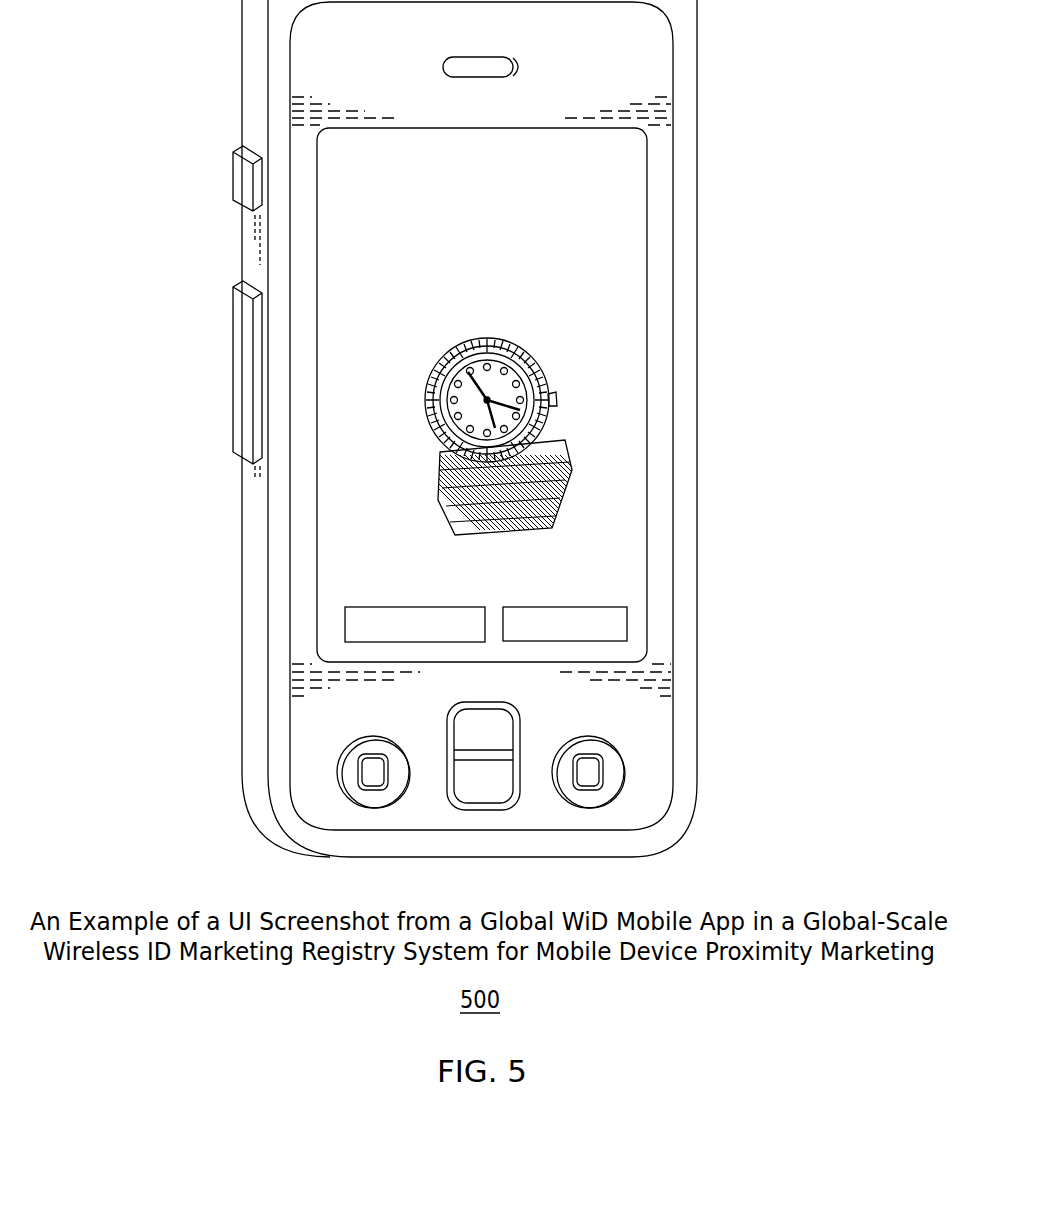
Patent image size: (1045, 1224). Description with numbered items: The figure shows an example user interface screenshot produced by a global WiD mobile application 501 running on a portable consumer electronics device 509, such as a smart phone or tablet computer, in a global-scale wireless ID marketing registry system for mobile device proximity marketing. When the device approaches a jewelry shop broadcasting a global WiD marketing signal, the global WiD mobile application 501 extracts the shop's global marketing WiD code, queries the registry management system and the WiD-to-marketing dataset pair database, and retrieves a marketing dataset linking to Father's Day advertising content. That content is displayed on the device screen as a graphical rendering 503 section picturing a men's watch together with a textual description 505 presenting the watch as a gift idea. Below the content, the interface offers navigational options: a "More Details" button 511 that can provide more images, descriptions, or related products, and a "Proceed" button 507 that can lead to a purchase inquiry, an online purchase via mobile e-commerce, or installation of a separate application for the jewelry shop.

The global WiD mobile application 501 is at (350, 195).
The graphical rendering section 503 is at (635, 375).
The textual description 505 is at (638, 547).
The "Proceed" button 507 is at (640, 622).
The portable consumer electronics device 509 is at (258, 611).
The "More Details" button 511 is at (393, 651).